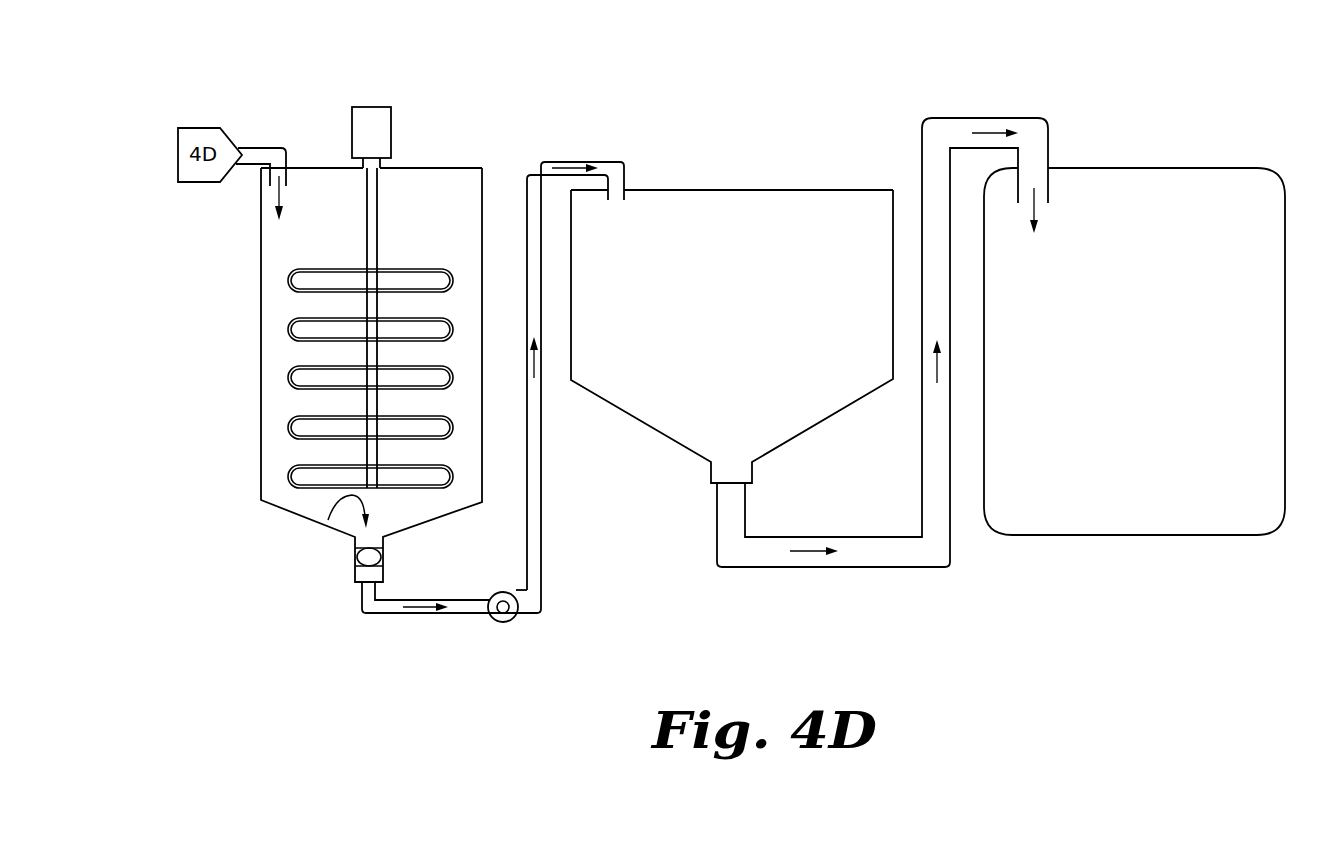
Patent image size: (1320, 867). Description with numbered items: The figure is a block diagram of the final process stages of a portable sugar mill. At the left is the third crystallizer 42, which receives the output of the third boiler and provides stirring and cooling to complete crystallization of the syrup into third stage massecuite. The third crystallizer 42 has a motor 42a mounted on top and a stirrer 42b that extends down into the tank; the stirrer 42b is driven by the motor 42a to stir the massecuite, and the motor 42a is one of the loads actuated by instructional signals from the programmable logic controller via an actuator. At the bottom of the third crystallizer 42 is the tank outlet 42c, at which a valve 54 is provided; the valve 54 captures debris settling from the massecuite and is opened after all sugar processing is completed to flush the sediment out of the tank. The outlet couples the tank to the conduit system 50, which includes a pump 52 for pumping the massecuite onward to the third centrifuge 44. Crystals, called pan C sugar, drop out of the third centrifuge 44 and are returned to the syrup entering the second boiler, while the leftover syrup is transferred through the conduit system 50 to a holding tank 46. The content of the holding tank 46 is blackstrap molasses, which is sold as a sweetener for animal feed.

The third crystallizer 42 is at (450, 168).
The motor 42a is at (384, 107).
The stirrer 42b is at (288, 424).
The crystallizer outlet 42c is at (328, 520).
The valve 54 is at (355, 557).
The pump 52 is at (510, 622).
The conduit system 50 is at (542, 543).
The third centrifuge 44 is at (818, 190).
The holding tank 46 is at (1228, 168).